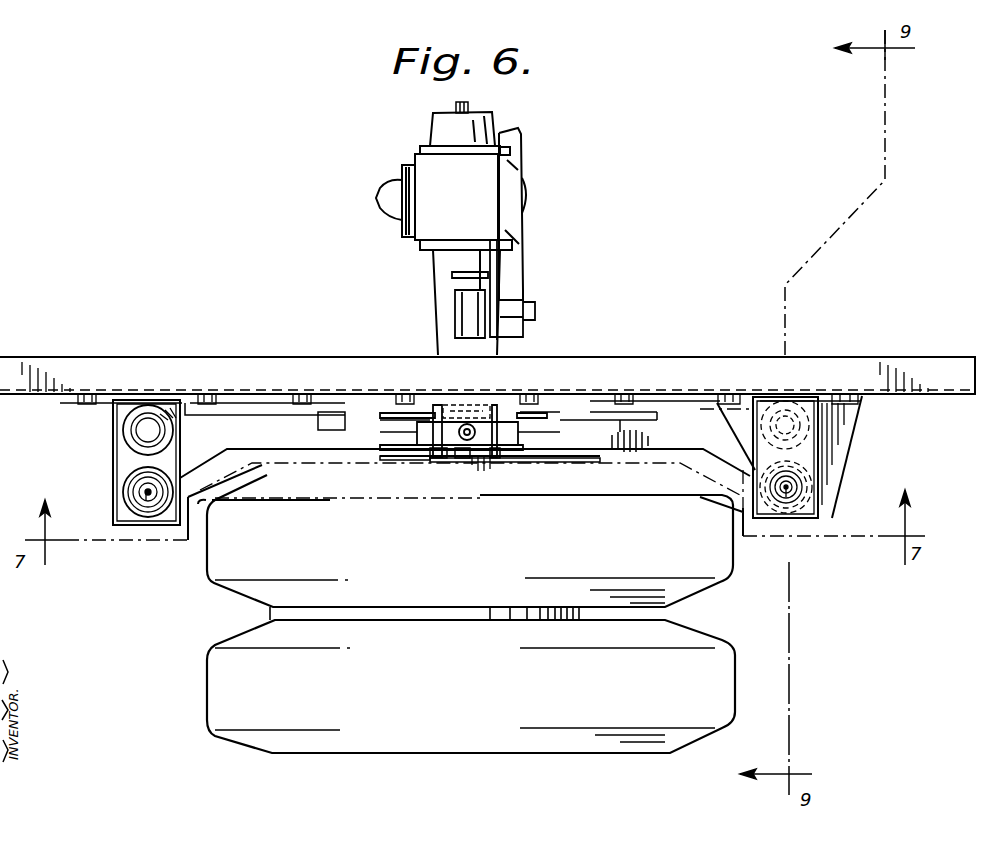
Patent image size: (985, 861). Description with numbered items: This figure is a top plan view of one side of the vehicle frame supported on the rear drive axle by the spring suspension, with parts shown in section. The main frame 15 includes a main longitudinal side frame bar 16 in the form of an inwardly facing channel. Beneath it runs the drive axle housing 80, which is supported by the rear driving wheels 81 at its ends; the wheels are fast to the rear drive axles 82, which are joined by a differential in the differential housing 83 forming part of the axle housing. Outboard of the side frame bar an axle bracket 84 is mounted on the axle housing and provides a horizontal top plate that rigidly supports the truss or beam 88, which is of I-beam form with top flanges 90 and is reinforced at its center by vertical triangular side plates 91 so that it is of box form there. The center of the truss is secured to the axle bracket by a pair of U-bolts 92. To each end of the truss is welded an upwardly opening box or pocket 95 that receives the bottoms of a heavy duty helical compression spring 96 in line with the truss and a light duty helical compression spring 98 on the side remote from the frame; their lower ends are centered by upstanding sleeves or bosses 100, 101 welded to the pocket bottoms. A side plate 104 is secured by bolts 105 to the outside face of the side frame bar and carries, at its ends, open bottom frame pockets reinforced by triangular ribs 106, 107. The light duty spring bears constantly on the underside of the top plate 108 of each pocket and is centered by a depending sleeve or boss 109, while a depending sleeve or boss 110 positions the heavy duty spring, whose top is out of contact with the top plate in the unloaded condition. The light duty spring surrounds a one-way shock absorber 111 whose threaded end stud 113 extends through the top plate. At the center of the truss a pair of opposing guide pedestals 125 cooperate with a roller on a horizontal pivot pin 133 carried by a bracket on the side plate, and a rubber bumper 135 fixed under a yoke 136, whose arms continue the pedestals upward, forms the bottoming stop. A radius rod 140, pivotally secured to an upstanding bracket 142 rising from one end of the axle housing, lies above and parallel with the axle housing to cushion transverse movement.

The main frame 15 is at (936, 357).
The main longitudinal side frame bar 16 is at (680, 357).
The drive axle housing 80 is at (436, 358).
The rear driving wheel 81 is at (248, 634).
The rear drive axle 82 is at (456, 105).
The differential housing 83 is at (530, 195).
The axle bracket 84 is at (432, 460).
The truss or beam 88 is at (215, 435).
The top flange 90 is at (647, 412).
The vertical triangular side plate 91 is at (582, 400).
The U-bolt 92 is at (446, 466).
The box or pocket 95 is at (113, 458).
The heavy duty helical compression spring 96 is at (168, 408).
The light duty helical compression spring 98 is at (122, 470).
The upstanding sleeve or boss 100 is at (136, 406).
The upstanding sleeve or boss 101 is at (124, 491).
The side plate 104 is at (318, 412).
The bolt 105 is at (322, 416).
The triangular rib 106 is at (812, 446).
The triangular rib 107 is at (737, 396).
The top plate 108 is at (787, 416).
The depending sleeve or boss 109 is at (805, 482).
The depending sleeve or boss 110 is at (785, 412).
The one-way shock absorber 111 is at (144, 492).
The threaded end stud 113 is at (146, 501).
The guide pedestal 125 is at (540, 398).
The horizontal pivot pin 133 is at (475, 460).
The rubber bumper 135 is at (465, 390).
The yoke 136 is at (505, 428).
The radius rod 140 is at (506, 133).
The upstanding bracket 142 is at (447, 297).